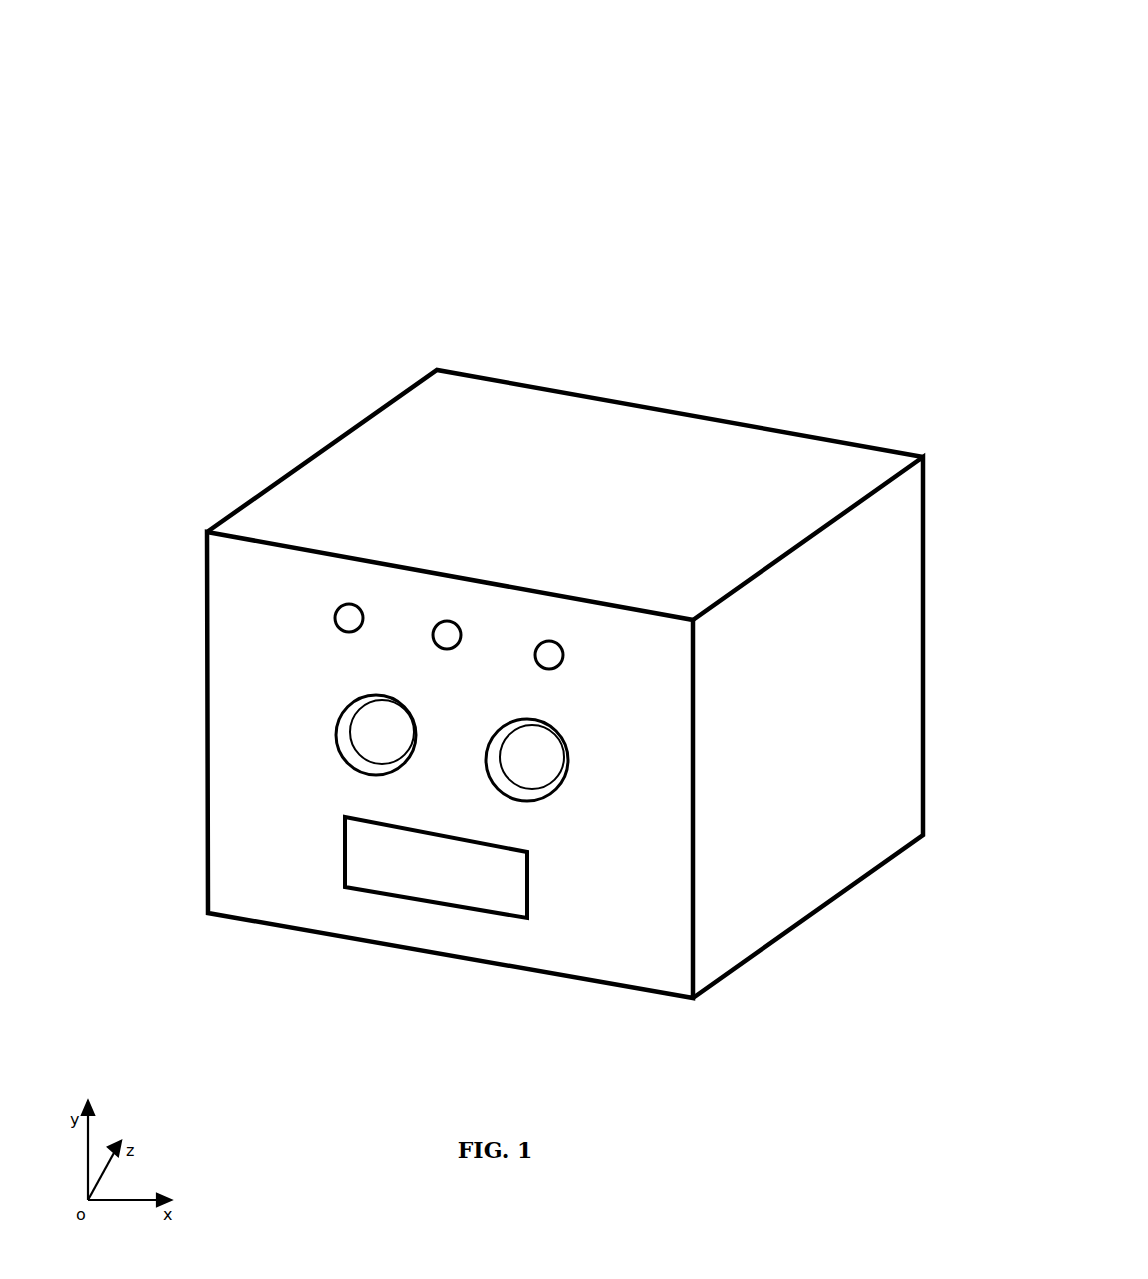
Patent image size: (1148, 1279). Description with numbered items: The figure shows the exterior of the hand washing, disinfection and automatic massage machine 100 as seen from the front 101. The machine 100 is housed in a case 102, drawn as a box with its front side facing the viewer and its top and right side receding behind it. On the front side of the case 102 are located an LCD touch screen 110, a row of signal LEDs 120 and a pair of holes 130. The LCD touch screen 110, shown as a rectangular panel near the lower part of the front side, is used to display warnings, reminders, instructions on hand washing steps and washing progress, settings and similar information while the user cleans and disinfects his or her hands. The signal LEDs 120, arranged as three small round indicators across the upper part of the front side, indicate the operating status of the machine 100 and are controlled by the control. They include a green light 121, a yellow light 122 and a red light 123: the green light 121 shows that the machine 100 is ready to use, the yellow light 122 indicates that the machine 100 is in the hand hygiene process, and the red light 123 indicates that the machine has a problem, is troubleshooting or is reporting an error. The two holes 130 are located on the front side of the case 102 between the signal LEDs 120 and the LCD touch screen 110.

The hand washing, disinfection and automatic massage machine 100 is at (746, 96).
The front 101 is at (243, 888).
The case 102 is at (750, 932).
The LCD touch screen 110 is at (428, 890).
The signal LEDs 120 is at (527, 220).
The green light 121 is at (354, 604).
The yellow light 122 is at (453, 621).
The red light 123 is at (555, 641).
The holes 130 is at (375, 742).